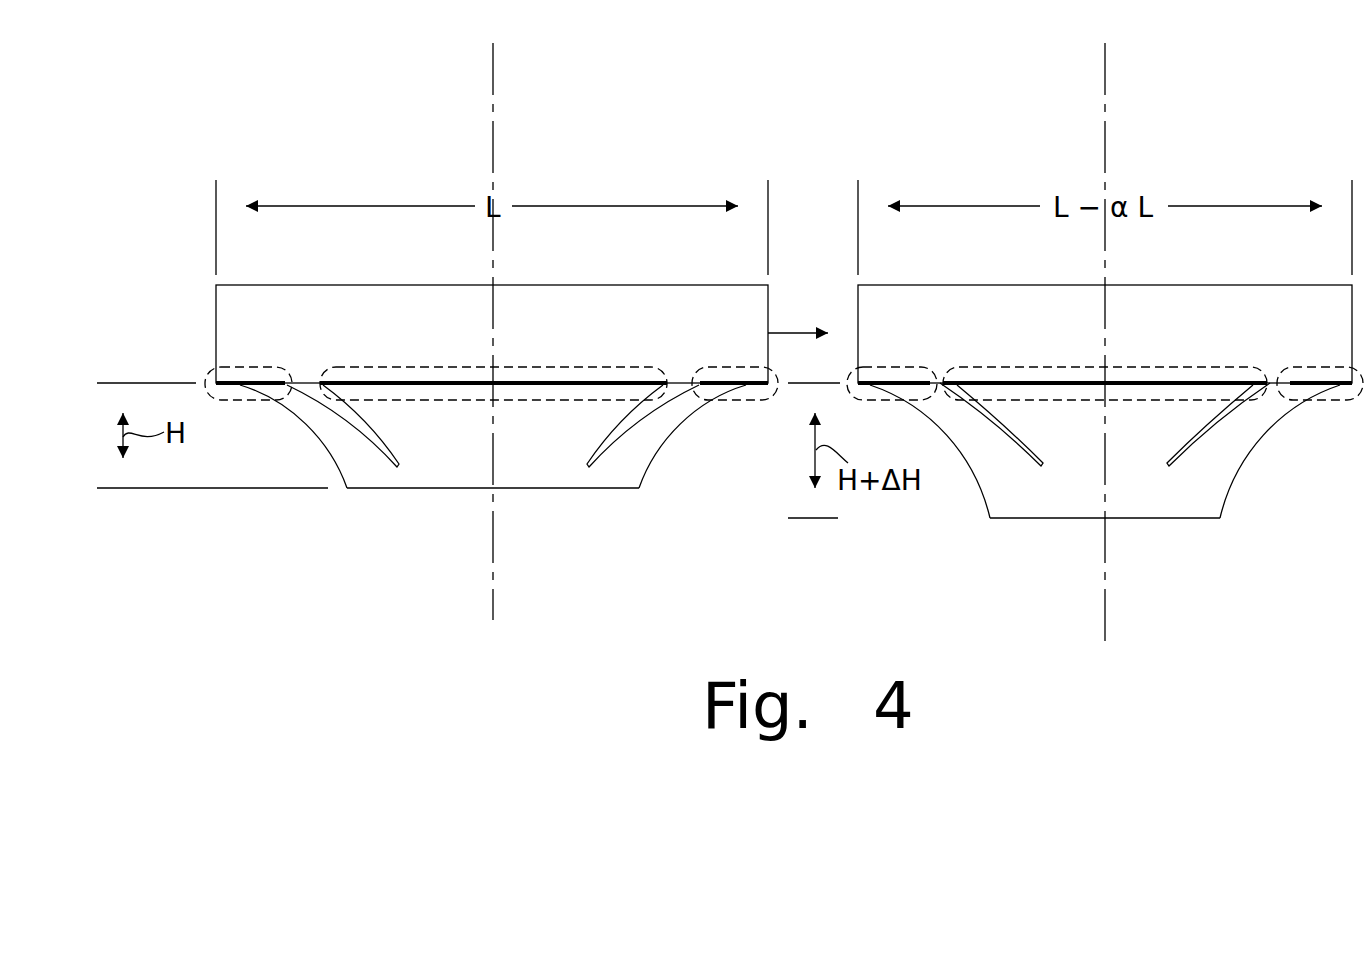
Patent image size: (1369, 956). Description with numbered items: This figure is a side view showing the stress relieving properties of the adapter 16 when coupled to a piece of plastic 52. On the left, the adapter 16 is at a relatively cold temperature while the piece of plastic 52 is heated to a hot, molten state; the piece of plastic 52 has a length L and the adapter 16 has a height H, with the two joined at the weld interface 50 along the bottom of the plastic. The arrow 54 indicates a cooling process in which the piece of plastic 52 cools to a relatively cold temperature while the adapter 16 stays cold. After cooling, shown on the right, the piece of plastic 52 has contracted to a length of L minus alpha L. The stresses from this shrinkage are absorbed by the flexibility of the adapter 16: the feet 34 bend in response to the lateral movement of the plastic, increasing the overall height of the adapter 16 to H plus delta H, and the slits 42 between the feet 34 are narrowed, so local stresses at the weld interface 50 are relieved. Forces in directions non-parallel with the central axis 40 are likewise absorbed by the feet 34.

The adapter 16 is at (433, 468).
The feet 34 is at (360, 463).
The central axis 40 is at (493, 580).
The slits 42 is at (353, 416).
The weld interface 50 is at (252, 366).
The piece of plastic 52 is at (232, 330).
The arrow 54 is at (810, 333).